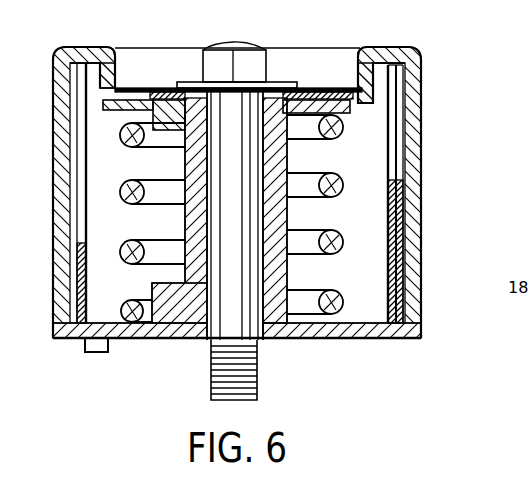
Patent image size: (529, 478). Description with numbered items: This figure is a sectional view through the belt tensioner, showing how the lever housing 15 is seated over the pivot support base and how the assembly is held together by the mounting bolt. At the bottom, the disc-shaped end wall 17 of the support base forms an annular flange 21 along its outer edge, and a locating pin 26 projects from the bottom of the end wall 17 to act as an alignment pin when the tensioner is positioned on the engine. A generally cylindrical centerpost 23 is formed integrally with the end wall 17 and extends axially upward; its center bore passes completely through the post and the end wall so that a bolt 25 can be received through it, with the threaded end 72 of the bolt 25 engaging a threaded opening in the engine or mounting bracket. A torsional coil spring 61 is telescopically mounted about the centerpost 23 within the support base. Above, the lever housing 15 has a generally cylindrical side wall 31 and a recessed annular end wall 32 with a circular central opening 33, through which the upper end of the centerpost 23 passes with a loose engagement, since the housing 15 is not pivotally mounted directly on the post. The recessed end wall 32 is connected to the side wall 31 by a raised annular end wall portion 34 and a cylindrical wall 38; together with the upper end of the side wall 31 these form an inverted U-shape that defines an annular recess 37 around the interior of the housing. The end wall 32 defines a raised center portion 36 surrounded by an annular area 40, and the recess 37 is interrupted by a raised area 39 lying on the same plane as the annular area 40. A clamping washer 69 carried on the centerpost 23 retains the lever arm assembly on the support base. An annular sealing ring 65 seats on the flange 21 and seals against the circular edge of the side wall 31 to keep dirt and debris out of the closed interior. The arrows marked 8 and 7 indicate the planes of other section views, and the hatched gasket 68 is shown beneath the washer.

The lever housing 15 is at (422, 103).
The raised annular-shaped end wall portion 34 is at (393, 48).
The cylindrical wall 38 is at (113, 77).
The recessed annular-shaped end wall 32 is at (354, 62).
The raised area 39 is at (157, 88).
The end wall 17 is at (131, 333).
The cylindrical side wall 31 is at (413, 255).
The annular sealing ring 65 is at (405, 287).
The annular-shaped recess 37 is at (378, 80).
The annular flange 21 is at (420, 337).
The locating pin 26 is at (95, 353).
The circular central opening 33 is at (278, 90).
The gasket 68 is at (324, 98).
The clamping washer 69 is at (215, 82).
The bolt 25 is at (225, 320).
The threaded end 72 is at (211, 388).
The centerpost 23 is at (282, 273).
The raised center portion 36 is at (322, 108).
The annular area 40 is at (341, 166).
The torsional coil spring 61 is at (307, 306).
The section line 8- 8 is at (53, 165).
The section line 7- 7 is at (53, 190).